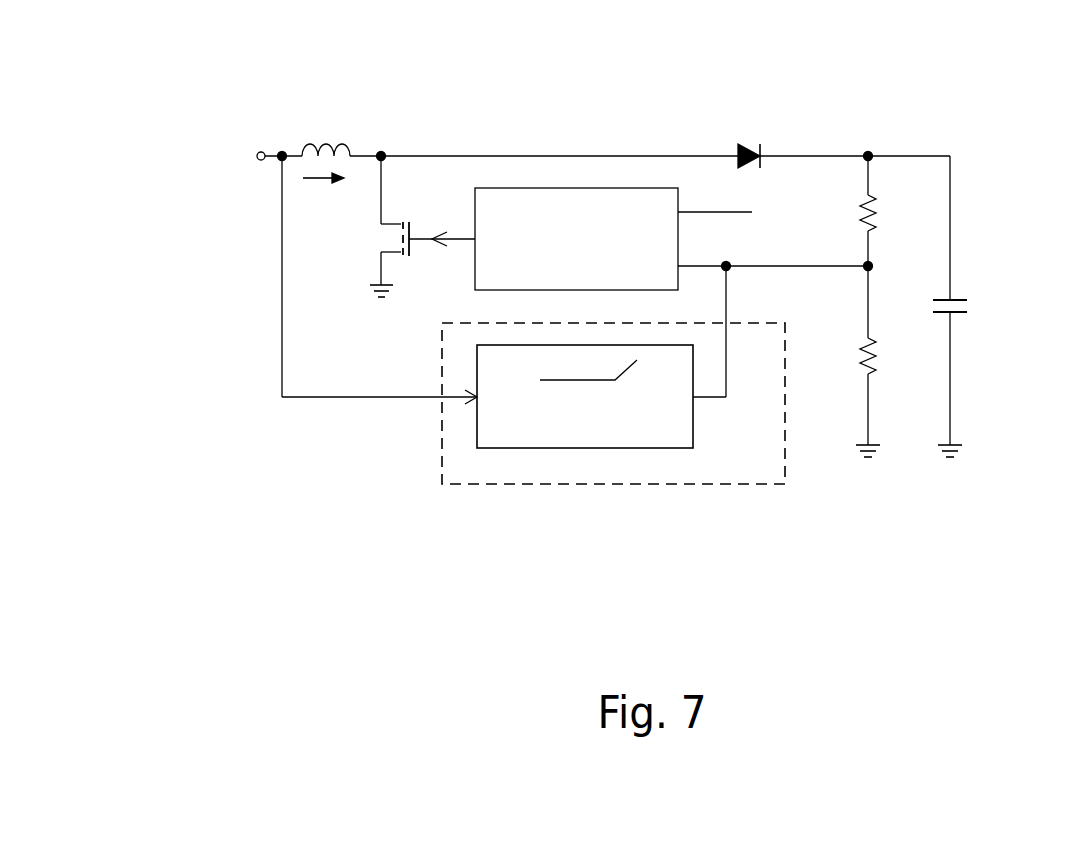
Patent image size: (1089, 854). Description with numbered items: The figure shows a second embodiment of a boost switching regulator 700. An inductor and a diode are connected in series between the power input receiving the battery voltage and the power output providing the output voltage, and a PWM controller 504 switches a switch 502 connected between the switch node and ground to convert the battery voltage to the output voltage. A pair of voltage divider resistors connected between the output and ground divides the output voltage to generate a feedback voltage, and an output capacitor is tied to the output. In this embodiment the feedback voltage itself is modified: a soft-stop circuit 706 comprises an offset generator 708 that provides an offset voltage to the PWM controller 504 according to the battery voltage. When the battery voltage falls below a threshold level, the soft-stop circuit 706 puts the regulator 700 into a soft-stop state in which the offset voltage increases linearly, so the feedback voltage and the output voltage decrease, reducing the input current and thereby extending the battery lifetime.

The boost switching regulator 700 is at (1015, 95).
The switch 502 is at (373, 242).
The PWM controller 504 is at (575, 188).
The soft-stop circuit 706 is at (723, 484).
The offset generator 708 is at (575, 448).